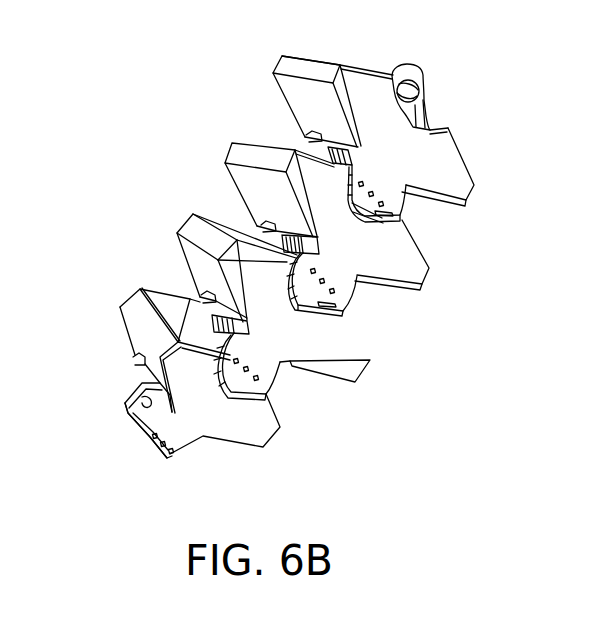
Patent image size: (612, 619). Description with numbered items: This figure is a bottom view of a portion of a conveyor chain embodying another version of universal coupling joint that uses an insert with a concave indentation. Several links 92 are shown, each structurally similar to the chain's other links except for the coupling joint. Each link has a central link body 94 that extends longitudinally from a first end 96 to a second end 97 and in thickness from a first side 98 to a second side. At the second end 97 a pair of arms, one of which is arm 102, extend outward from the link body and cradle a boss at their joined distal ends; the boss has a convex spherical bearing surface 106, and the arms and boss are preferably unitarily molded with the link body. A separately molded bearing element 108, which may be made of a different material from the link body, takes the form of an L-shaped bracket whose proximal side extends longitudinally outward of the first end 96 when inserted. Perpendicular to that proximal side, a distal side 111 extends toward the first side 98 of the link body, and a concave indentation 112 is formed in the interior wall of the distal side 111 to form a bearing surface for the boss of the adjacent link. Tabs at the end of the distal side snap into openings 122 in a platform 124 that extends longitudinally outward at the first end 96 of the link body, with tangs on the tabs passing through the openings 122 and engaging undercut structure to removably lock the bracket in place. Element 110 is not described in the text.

The link 92 is at (373, 173).
The central link body 94 is at (246, 233).
The first end 96 is at (270, 348).
The second end 97 is at (360, 67).
The first side 98 is at (402, 196).
The arm 102 is at (429, 103).
The convex spherical bearing surface 106 is at (418, 84).
The bearing element 108 is at (139, 428).
The upper ridge 110 is at (145, 388).
The distal side 111 is at (132, 425).
The concave indentation 112 is at (142, 399).
The openings 122 is at (172, 462).
The platform 124 is at (268, 366).